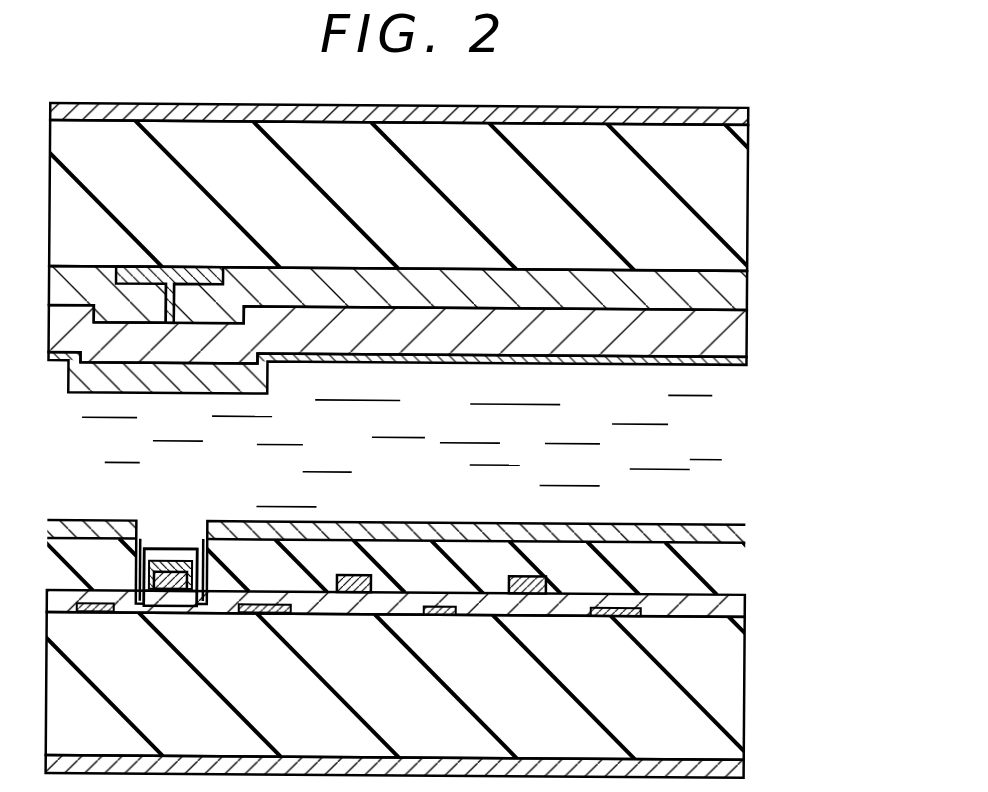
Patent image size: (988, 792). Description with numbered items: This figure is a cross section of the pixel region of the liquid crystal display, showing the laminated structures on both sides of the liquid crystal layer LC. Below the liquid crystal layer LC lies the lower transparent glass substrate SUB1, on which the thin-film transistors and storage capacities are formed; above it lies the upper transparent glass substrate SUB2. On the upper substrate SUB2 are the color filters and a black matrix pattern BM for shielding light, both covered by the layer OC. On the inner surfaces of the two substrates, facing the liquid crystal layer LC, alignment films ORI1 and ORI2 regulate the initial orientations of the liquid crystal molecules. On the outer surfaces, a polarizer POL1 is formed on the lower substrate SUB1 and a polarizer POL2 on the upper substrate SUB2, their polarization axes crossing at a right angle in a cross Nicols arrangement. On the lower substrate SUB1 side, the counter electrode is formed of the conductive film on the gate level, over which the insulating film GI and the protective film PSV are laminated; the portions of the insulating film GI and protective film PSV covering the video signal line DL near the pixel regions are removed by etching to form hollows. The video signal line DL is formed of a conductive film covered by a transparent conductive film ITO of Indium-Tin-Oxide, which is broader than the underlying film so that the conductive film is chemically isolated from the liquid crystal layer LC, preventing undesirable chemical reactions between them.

The polarizer POL2 is at (747, 117).
The upper transparent glass substrate SUB2 is at (742, 205).
The black matrix pattern BM is at (175, 272).
The layer OC (overcoat) OC is at (735, 327).
The alignment film ORI2 is at (737, 357).
The liquid crystal layer LC is at (738, 415).
The video signal line DL is at (156, 560).
The transparent conductive film ITO is at (180, 557).
The alignment film ORI1 is at (737, 530).
The protective film PSV is at (733, 562).
The insulating film GI is at (735, 595).
The lower transparent glass substrate SUB1 is at (730, 677).
The polarizer POL1 is at (735, 772).